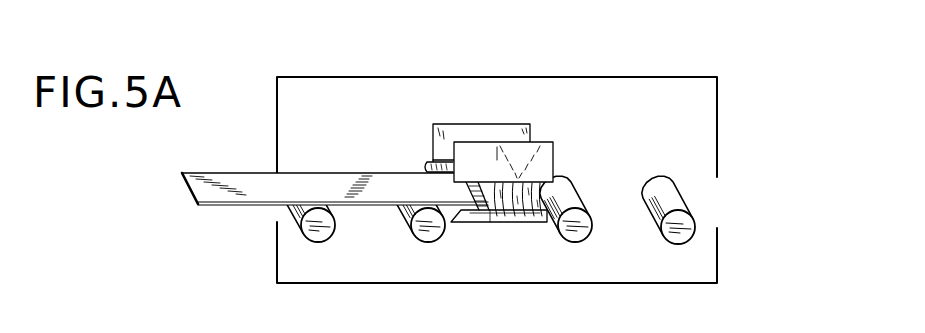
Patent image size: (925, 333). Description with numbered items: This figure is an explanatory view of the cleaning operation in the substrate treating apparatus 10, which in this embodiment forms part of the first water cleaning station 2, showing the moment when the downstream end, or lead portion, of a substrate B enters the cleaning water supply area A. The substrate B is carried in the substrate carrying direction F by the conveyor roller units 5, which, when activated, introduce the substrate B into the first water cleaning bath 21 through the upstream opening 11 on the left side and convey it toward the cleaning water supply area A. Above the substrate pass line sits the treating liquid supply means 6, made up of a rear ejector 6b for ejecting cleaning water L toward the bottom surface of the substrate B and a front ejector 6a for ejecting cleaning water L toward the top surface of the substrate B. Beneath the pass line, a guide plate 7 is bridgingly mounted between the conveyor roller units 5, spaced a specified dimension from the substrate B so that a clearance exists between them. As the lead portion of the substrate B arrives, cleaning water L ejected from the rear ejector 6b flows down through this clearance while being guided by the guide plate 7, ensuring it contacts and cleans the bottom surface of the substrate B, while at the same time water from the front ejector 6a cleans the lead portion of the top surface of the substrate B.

The first water cleaning station 2 is at (676, 70).
The conveyor roller units 5 is at (323, 240).
The treating liquid supply means 6 is at (513, 91).
The front ejector 6a is at (473, 43).
The rear ejector 6b is at (477, 128).
The guide plate 7 is at (462, 223).
The substrate treating apparatus 10 is at (358, 85).
The opening 11 is at (277, 193).
The first water cleaning bath 21 is at (497, 149).
The cleaning water supply area A is at (463, 197).
The substrate B is at (230, 209).
The substrate carrying direction F is at (727, 215).
The cleaning water L is at (527, 223).